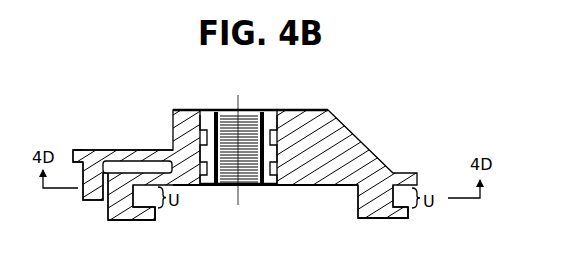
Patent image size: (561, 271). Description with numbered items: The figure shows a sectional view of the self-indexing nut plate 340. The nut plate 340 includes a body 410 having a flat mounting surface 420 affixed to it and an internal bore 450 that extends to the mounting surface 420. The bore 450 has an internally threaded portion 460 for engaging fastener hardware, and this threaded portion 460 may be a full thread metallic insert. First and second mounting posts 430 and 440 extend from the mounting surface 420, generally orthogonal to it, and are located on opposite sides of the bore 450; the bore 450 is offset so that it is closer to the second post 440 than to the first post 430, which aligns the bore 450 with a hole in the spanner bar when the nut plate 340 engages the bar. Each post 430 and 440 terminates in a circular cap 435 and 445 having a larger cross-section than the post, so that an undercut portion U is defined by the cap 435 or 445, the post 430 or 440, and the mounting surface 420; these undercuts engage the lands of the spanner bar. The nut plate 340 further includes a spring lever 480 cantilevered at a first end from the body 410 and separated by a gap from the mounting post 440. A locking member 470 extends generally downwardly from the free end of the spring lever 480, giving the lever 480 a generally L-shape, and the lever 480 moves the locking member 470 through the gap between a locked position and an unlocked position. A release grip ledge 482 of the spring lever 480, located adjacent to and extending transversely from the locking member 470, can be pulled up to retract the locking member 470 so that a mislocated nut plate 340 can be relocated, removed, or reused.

The self-indexing nut plate 340 is at (280, 130).
The body 410 is at (245, 148).
The flat mounting surface 420 is at (264, 213).
The first mounting post 430 is at (350, 201).
The circular cap 435 is at (408, 239).
The second mounting post 440 is at (98, 219).
The circular cap 445 is at (156, 229).
The internal bore 450 is at (220, 130).
The internally threaded portion 460 is at (292, 135).
The locking member 470 is at (66, 198).
The spring lever 480 is at (123, 140).
The release grip ledge 482 is at (50, 137).